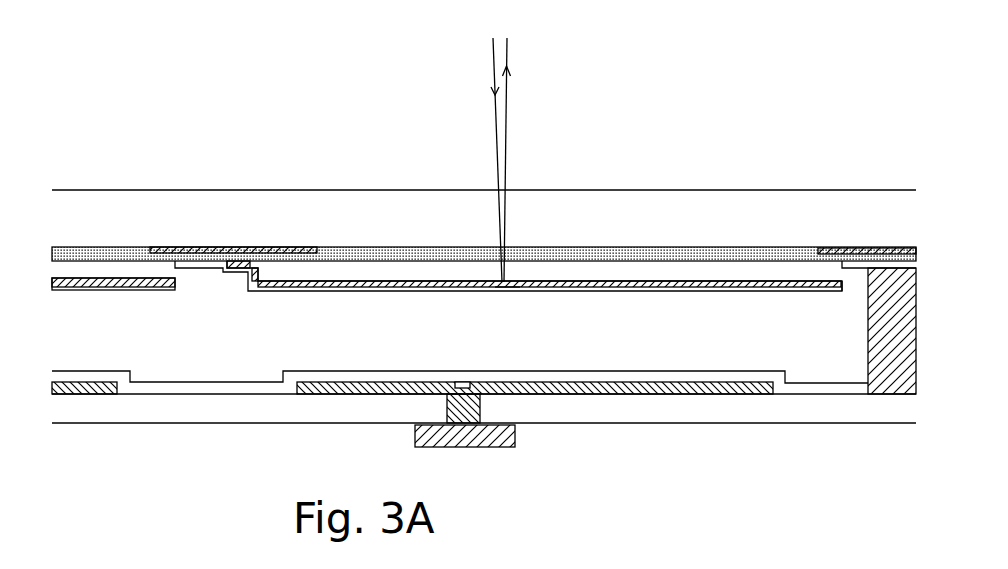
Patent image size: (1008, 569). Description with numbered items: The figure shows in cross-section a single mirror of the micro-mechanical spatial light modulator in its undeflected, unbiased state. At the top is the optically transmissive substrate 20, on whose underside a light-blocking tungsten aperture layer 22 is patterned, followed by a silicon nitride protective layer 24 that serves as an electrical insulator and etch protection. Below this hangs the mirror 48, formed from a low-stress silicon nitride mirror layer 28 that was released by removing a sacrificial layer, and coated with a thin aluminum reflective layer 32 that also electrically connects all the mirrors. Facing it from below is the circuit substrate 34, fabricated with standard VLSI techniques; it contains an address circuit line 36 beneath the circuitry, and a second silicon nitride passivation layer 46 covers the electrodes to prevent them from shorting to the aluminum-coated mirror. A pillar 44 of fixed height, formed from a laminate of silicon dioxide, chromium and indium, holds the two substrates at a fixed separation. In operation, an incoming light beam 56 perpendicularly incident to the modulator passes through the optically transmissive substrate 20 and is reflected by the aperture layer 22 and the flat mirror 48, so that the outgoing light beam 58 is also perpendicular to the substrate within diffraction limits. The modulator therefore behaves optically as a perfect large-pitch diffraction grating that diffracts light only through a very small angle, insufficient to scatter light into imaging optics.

The optically transmissive substrate 20 is at (345, 231).
The aperture layer 22 is at (206, 247).
The protective layer 24 is at (97, 247).
The mirror layer 28 is at (510, 290).
The reflective layer 32 is at (460, 290).
The circuit substrate 34 is at (662, 471).
The address circuit line 36 is at (515, 437).
The pillar 44 is at (880, 336).
The passivation layer 46 is at (585, 383).
The mirror 48 is at (817, 299).
The incoming light beam 56 is at (477, 160).
The outgoing light beam 58 is at (526, 160).